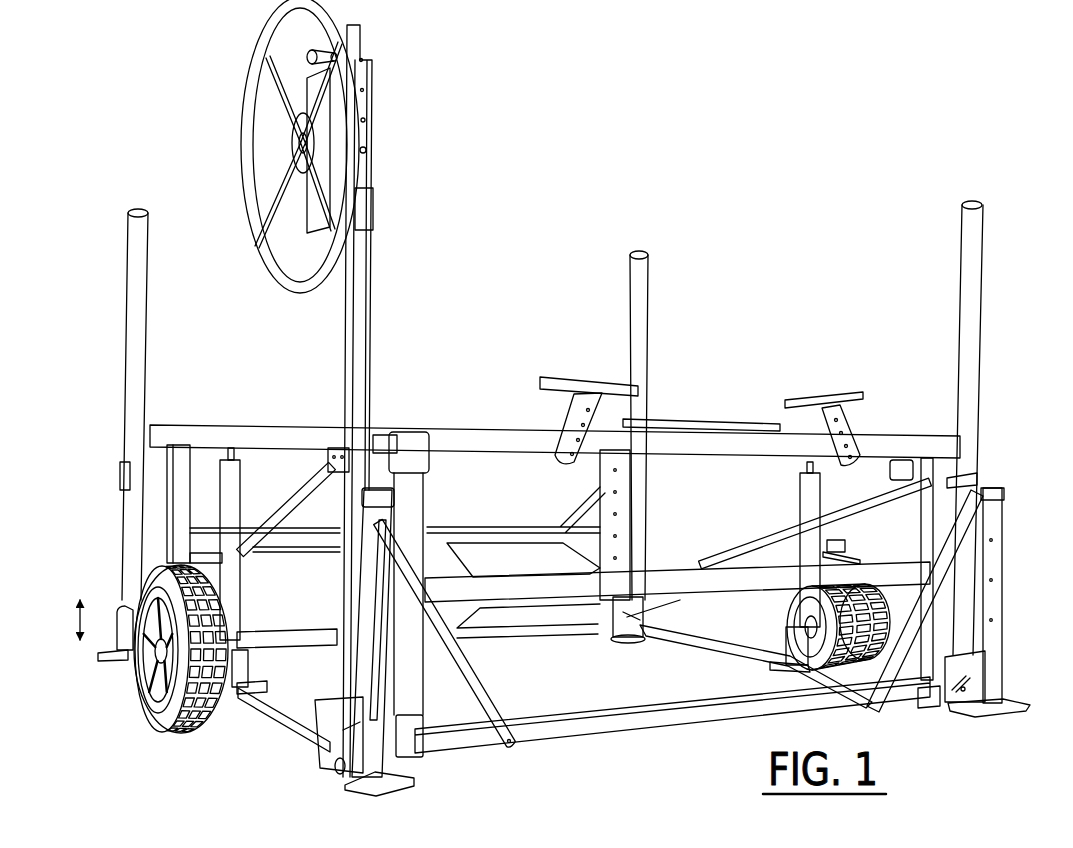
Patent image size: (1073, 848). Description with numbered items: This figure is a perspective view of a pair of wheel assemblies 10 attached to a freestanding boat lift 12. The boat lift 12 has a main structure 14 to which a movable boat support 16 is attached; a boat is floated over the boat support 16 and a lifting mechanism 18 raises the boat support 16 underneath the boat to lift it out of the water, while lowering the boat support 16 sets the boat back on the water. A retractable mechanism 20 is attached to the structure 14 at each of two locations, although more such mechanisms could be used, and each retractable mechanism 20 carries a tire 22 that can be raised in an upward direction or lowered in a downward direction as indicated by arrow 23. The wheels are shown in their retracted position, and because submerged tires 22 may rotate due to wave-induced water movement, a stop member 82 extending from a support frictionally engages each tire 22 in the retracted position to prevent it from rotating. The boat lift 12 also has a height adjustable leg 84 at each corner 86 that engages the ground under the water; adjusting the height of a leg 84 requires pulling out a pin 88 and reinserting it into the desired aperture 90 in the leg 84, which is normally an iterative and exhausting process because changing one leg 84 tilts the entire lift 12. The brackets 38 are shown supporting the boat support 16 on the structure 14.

The wheel assembly 10 is at (103, 700).
The boat lift 12 is at (446, 376).
The main structure 14 is at (615, 736).
The boat support 16 is at (694, 410).
The lifting mechanism 18 is at (240, 140).
The retractable mechanism 20 is at (242, 608).
The tire 22 is at (200, 728).
The arrow 23 is at (78, 613).
The bunk bracket 38 is at (226, 452).
The stop member 82 is at (190, 560).
The height adjustable leg 84 is at (125, 472).
The corner 86 is at (98, 658).
The pin 88 is at (323, 727).
The aperture 90 is at (368, 640).